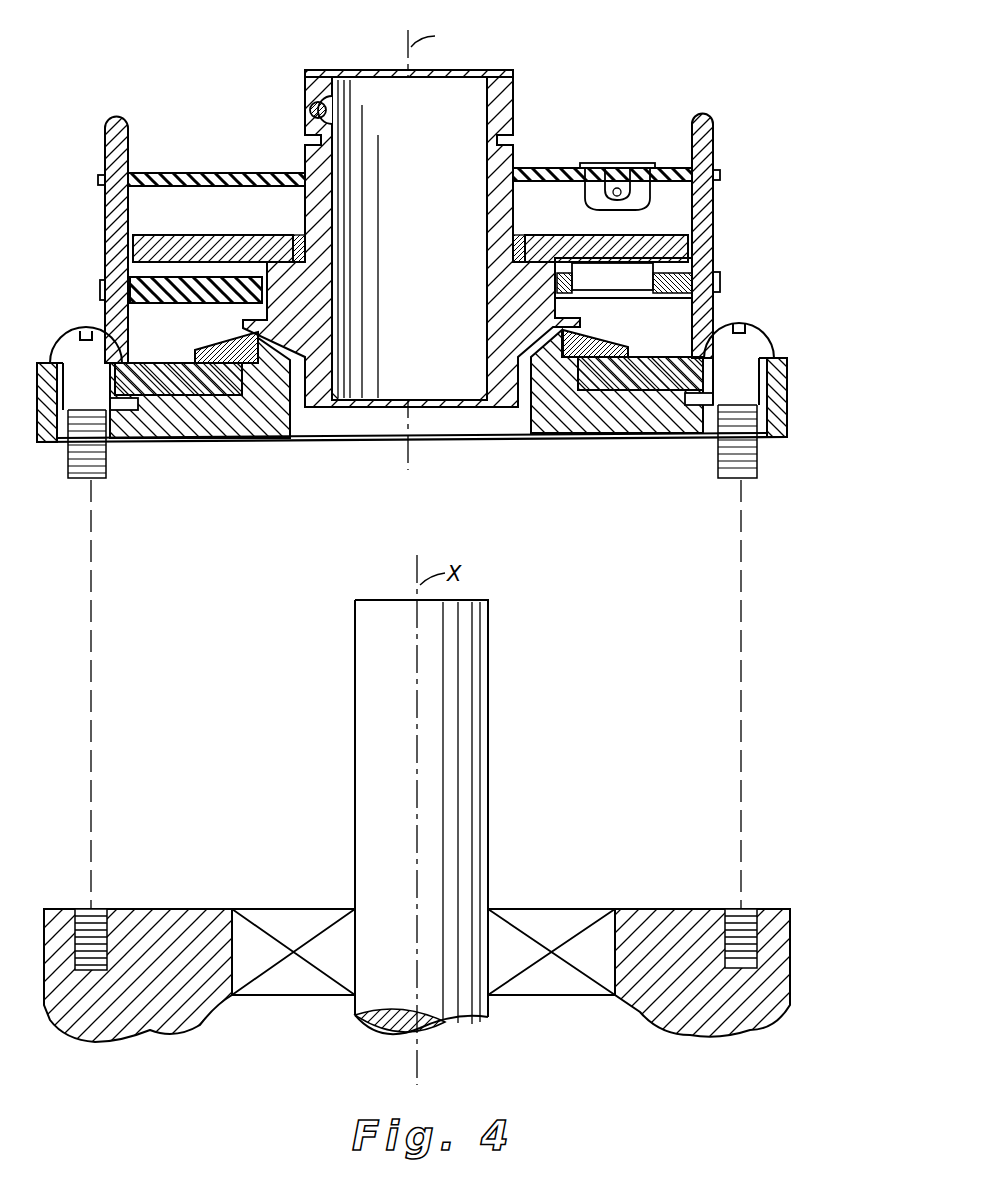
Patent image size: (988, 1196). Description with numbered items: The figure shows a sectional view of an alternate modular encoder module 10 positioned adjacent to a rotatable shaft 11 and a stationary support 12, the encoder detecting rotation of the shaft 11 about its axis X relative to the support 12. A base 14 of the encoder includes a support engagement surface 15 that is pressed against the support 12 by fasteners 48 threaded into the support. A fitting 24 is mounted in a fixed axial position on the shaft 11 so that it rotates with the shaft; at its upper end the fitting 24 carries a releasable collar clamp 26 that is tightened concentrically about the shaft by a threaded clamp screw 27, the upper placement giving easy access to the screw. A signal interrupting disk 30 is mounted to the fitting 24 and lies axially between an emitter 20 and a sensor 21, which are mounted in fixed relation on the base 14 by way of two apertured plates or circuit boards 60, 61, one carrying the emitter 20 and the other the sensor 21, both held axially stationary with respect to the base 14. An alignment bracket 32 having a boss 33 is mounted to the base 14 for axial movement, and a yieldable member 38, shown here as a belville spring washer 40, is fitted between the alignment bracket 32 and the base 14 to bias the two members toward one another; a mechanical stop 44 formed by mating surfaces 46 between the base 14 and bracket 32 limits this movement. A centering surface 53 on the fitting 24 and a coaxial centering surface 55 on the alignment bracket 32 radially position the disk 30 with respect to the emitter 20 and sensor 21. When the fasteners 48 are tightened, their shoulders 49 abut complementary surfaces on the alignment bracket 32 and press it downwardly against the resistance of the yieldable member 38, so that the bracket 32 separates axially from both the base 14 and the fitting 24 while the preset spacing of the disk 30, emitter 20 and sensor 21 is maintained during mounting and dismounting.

The encoder module 10 is at (664, 40).
The shaft 11 is at (396, 703).
The support 12 is at (665, 907).
The base 14 is at (792, 370).
The support engagement surface 15 is at (635, 437).
The emitter 20 is at (630, 165).
The sensor 21 is at (610, 272).
The fitting 24 is at (513, 67).
The clamp 26 is at (304, 67).
The clamp screw 27 is at (309, 110).
The signal interrupting disk 30 is at (622, 238).
The alignment bracket 32 is at (525, 420).
The boss 33 is at (625, 400).
The yieldable member 38 is at (603, 326).
The belville spring washer 40 is at (620, 347).
The mechanical stop 44 is at (176, 402).
The mating surfaces 46 is at (185, 362).
The fastener 48 is at (754, 316).
The shoulder 49 is at (745, 415).
The centering surface 53 is at (522, 372).
The centering surface 55 is at (522, 352).
The circuit board 60 is at (690, 170).
The circuit board 61 is at (690, 280).